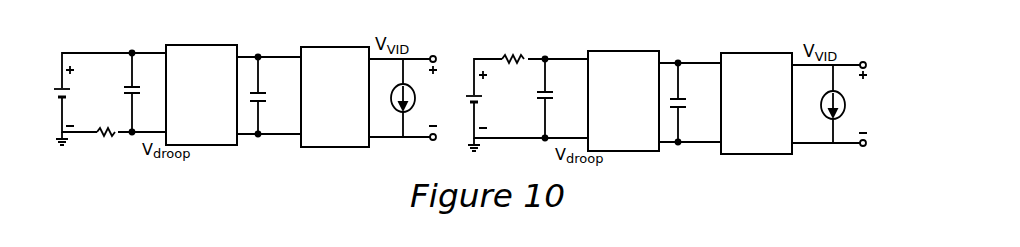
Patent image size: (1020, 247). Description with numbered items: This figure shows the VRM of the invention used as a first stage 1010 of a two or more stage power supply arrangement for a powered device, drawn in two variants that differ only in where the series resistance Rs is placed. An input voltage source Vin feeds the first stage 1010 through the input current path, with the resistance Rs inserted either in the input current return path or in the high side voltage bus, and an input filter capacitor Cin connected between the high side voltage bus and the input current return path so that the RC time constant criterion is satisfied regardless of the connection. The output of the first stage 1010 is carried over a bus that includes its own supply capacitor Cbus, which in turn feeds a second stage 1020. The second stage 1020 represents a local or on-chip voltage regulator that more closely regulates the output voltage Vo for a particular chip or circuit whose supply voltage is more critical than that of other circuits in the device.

The first stage 1010 is at (195, 45).
The second stage 1020 is at (332, 47).
The input voltage source Vin is at (281, 98).
The series resistance Rs is at (310, 85).
The input filter capacitor Cin is at (351, 95).
The bus supply capacitor Cbus is at (482, 99).
The output voltage Vo is at (629, 101).